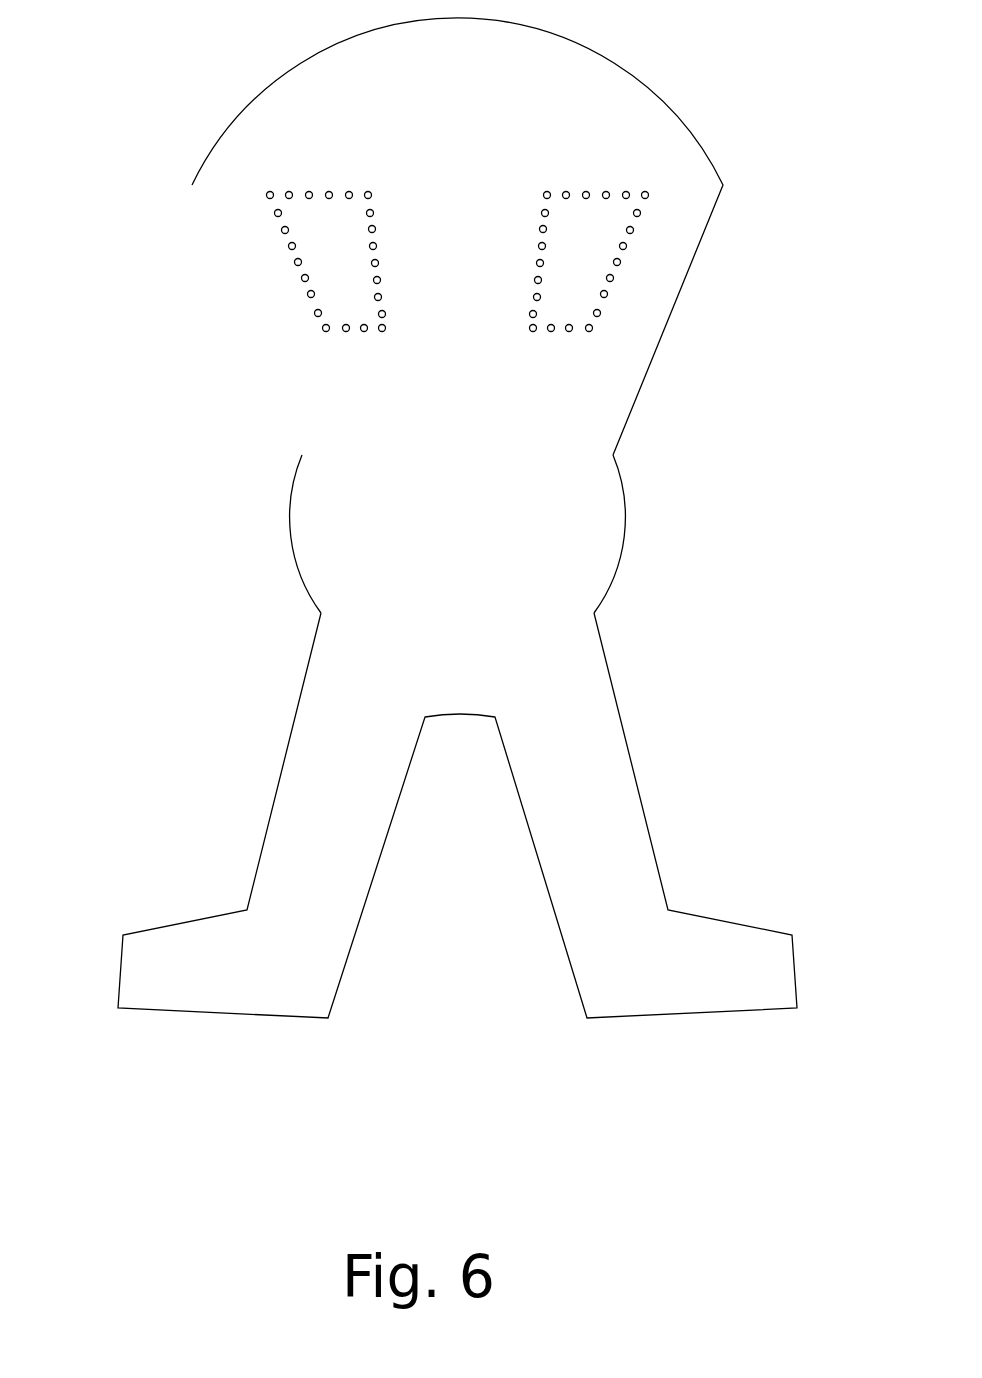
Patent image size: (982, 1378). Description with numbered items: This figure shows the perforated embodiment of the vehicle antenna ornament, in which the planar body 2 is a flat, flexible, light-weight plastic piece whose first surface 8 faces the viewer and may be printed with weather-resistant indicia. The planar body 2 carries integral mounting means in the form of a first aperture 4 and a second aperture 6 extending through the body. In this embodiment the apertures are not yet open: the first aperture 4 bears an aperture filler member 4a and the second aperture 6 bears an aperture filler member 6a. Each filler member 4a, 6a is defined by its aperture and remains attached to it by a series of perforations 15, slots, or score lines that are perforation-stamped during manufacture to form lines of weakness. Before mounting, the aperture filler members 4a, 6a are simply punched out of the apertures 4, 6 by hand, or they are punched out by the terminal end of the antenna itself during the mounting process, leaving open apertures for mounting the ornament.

The planar body 2 is at (472, 518).
The first aperture 4 is at (713, 172).
The aperture filler member 4a is at (713, 172).
The second aperture 6 is at (209, 227).
The aperture filler member 6a is at (345, 300).
The first surface 8 is at (402, 513).
The perforations 15 is at (588, 192).